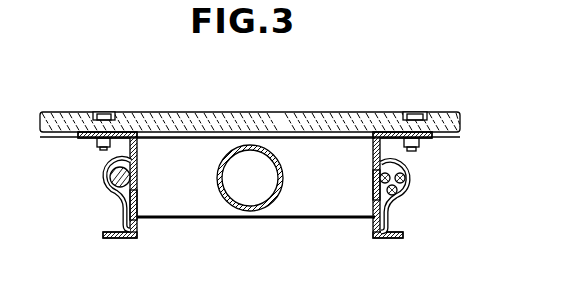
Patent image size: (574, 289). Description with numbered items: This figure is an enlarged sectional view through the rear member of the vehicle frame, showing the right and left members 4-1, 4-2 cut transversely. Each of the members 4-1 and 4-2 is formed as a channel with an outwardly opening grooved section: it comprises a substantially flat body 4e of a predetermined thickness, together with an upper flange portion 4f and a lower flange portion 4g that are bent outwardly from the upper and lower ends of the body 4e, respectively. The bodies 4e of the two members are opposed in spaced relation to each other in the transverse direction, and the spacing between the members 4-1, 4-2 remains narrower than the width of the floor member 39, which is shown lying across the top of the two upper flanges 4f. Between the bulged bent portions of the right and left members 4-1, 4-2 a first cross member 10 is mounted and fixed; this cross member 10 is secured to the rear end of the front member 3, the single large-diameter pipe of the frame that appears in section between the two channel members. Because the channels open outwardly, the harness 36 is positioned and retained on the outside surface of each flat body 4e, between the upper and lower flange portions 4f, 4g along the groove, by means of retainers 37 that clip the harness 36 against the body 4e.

The front member 3 is at (258, 212).
The first cross member 10 is at (215, 160).
The right member 4-1 is at (373, 233).
The left member 4-2 is at (139, 176).
The flat body 4e is at (139, 200).
The upper flange portion 4f is at (82, 138).
The lower flange portion 4g is at (112, 239).
The harness 36 is at (114, 180).
The retainer 37 is at (124, 212).
The floor member 39 is at (79, 113).